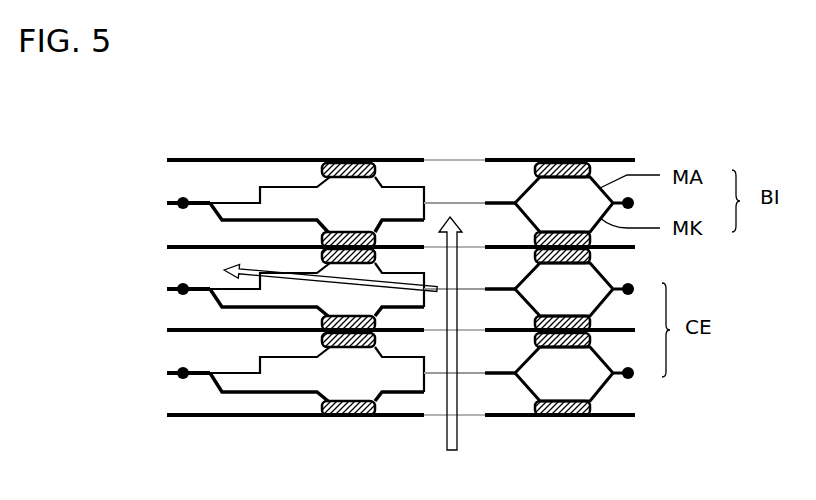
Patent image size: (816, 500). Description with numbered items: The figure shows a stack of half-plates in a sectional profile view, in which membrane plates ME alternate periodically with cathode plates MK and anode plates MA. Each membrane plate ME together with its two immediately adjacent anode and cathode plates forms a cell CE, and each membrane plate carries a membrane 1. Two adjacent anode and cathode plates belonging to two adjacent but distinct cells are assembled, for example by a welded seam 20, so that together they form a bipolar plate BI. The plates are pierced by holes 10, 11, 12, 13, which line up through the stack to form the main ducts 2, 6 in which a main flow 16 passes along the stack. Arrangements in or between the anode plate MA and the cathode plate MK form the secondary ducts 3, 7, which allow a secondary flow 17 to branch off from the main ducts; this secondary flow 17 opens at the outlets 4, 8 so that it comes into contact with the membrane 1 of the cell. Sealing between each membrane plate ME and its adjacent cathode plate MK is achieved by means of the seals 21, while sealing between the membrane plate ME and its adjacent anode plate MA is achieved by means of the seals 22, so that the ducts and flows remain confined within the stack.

The membrane 1 is at (200, 160).
The main duct 2 is at (512, 334).
The secondary duct 3 is at (357, 247).
The outlet 4 is at (266, 276).
The main duct 6 is at (468, 388).
The secondary duct 7 is at (365, 195).
The outlet 8 is at (235, 200).
The hole 10 is at (549, 289).
The hole 11 is at (549, 289).
The hole 12 is at (549, 289).
The hole 13 is at (465, 328).
The main flow 16 is at (448, 435).
The secondary flow 17 is at (340, 277).
The welded seam 20 is at (178, 375).
The seal 21 is at (350, 160).
The seal 22 is at (338, 418).